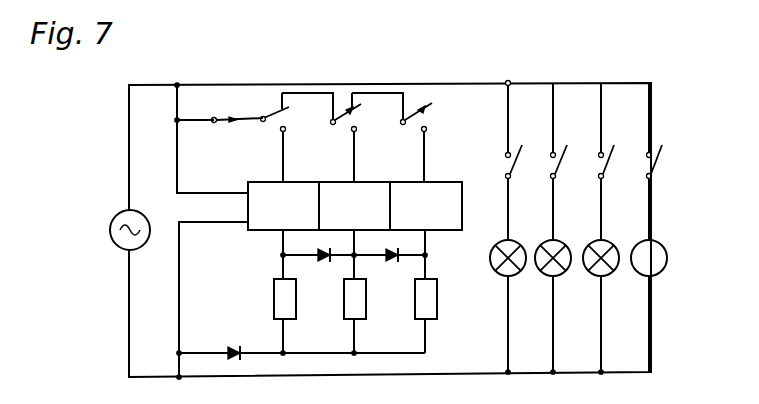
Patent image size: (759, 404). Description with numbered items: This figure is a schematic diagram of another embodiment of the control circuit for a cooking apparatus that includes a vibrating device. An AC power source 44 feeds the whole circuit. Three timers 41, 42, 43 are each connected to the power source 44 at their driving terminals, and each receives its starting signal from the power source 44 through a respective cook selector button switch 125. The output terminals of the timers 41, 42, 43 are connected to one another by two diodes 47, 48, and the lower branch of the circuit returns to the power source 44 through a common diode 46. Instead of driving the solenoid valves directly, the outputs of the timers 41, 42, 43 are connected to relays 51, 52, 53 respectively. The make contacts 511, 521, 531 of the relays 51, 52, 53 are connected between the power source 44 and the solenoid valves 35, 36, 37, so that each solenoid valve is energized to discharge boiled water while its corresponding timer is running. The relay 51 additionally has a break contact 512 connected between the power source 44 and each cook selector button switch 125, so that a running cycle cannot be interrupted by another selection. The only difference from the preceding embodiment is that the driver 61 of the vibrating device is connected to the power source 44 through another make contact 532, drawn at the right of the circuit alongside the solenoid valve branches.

The solenoid valve 35 is at (491, 278).
The solenoid valve 36 is at (536, 278).
The solenoid valve 37 is at (584, 279).
The timer 41 is at (294, 222).
The timer 42 is at (366, 220).
The timer 43 is at (436, 220).
The power source 44 is at (101, 238).
The common diode 46 is at (240, 343).
The diode 47 is at (325, 262).
The diode 48 is at (393, 262).
The relay 51 is at (274, 291).
The relay 52 is at (370, 311).
The relay 53 is at (441, 311).
The driver of the vibrating device 61 is at (667, 258).
The cook selector button switch 125 is at (292, 116).
The make contact 511 is at (505, 165).
The break contact 512 is at (222, 128).
The make contact 521 is at (550, 160).
The make contact 531 is at (598, 160).
The make contact 532 is at (662, 165).